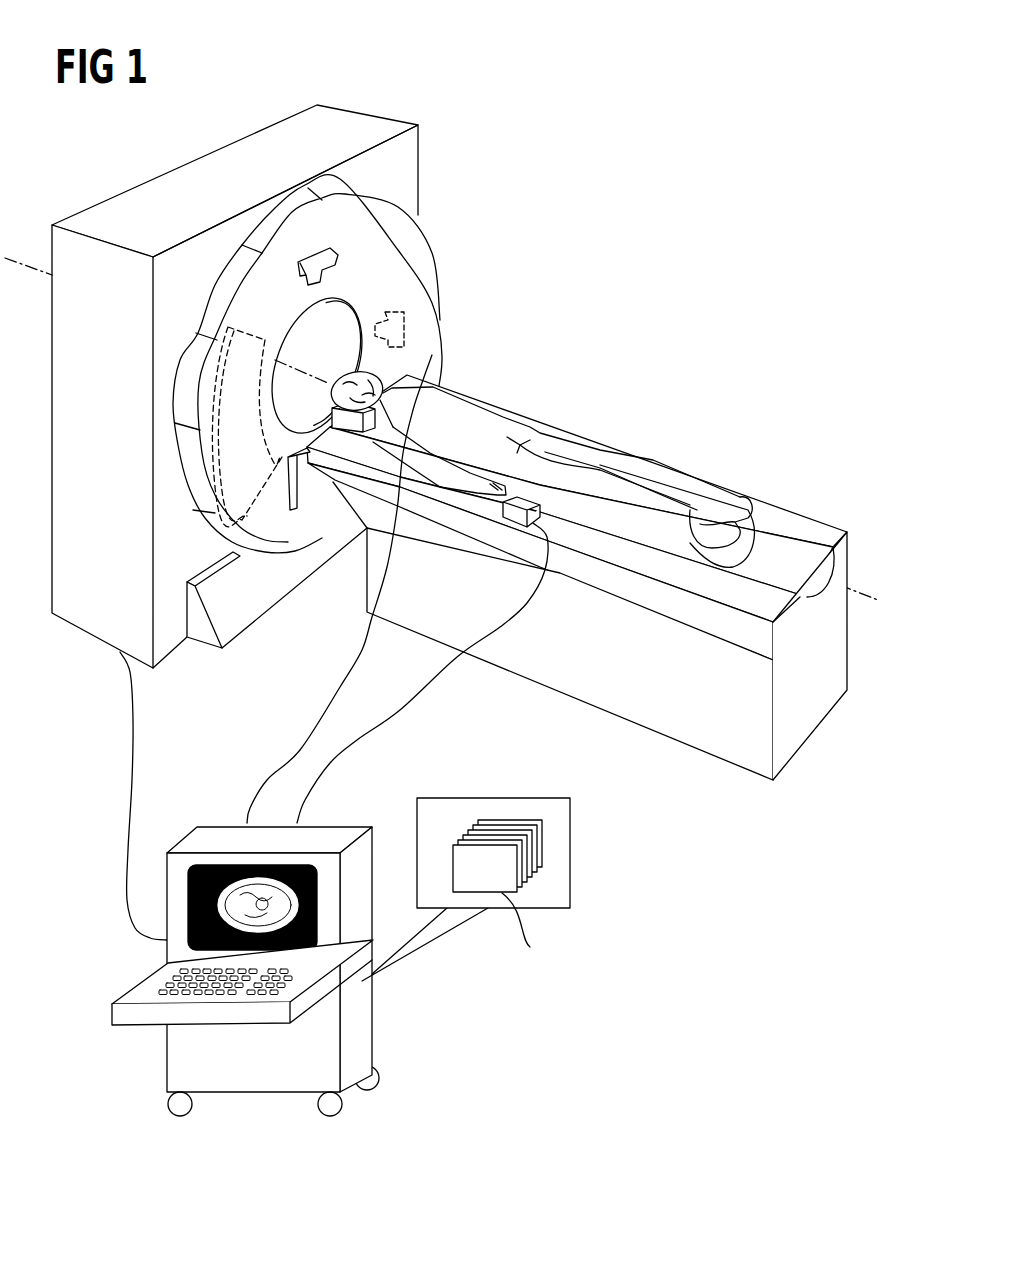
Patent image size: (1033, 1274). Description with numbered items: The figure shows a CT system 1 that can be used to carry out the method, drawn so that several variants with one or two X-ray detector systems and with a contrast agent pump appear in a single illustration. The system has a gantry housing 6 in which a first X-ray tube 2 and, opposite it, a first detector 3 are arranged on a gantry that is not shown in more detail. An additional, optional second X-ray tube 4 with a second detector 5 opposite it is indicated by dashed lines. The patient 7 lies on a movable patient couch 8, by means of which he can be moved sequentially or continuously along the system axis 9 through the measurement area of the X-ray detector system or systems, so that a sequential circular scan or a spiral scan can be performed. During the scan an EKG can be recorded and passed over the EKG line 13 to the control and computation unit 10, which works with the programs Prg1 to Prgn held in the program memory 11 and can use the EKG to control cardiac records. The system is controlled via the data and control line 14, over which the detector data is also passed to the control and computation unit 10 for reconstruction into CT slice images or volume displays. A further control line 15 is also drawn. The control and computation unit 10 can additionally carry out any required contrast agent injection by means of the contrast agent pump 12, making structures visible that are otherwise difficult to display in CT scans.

The CT system 1 is at (610, 350).
The first X-ray tube 2 is at (338, 255).
The first detector 3 is at (307, 492).
The second X-ray tube 4 is at (406, 330).
The second detector 5 is at (243, 497).
The gantry housing 6 is at (83, 600).
The patient 7 is at (345, 335).
The movable patient couch 8 is at (552, 668).
The system axis 9 is at (872, 592).
The control and computation unit 10 is at (358, 1035).
The program memory 11 is at (571, 829).
The contrast agent pump 12 is at (510, 522).
The EKG line 13 is at (307, 723).
The data and control line 14 is at (130, 757).
The control line 15 is at (357, 740).